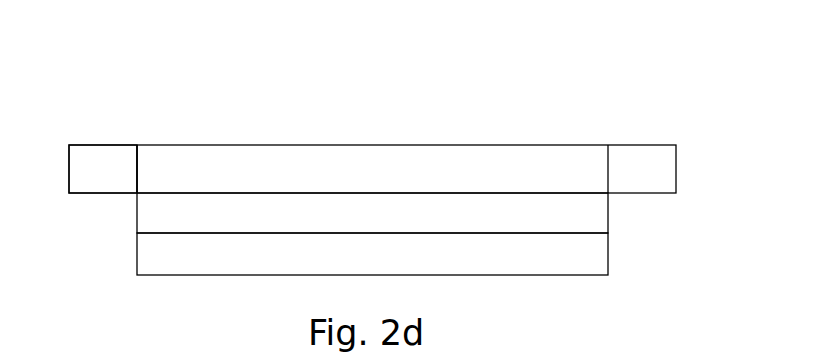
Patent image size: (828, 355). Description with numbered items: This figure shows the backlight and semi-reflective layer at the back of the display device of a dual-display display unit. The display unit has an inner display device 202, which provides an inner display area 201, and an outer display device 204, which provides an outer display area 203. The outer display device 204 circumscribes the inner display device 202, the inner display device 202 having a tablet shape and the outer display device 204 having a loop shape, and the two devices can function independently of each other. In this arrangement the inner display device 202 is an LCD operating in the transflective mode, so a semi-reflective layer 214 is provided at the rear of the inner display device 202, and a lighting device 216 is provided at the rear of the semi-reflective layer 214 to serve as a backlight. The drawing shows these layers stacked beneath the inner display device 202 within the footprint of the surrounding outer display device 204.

The inner display area 201 is at (419, 144).
The inner display device 202 is at (364, 154).
The outer display area 203 is at (123, 145).
The outer display device 204 is at (102, 152).
The semi-reflective layer 214 is at (561, 223).
The lighting device 216 is at (467, 262).